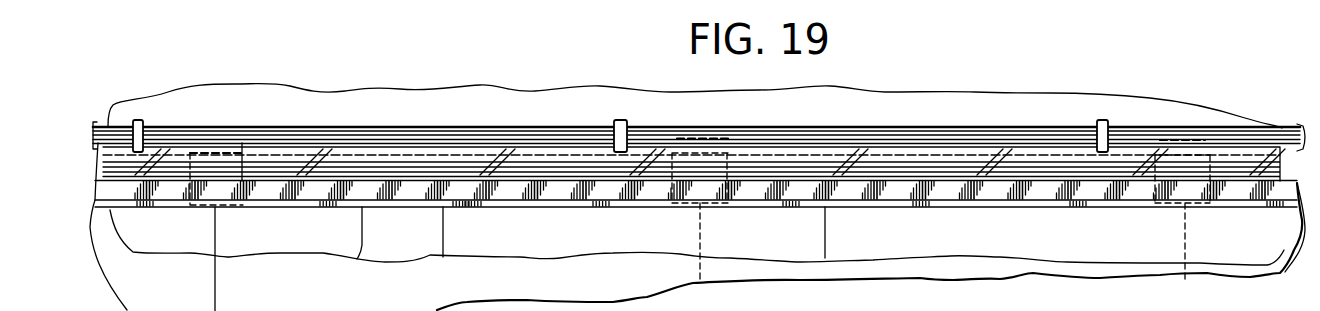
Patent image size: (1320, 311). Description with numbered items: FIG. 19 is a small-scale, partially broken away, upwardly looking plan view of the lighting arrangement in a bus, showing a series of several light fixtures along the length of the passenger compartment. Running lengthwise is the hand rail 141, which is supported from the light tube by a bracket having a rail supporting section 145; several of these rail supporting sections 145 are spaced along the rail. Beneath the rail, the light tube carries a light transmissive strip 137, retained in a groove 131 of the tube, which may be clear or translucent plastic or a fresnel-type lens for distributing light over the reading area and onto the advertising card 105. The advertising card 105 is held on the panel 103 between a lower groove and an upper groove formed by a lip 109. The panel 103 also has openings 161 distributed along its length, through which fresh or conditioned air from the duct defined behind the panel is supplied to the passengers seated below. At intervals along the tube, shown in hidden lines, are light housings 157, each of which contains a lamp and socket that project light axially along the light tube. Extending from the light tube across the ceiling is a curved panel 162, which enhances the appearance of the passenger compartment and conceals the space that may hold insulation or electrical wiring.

The panel 103 is at (1172, 274).
The advertising card 105 is at (195, 247).
The lip 109 is at (357, 259).
The groove 131 is at (165, 207).
The light transmissive strip 137 is at (387, 156).
The hand rail 141 is at (1010, 129).
The rail supporting section 145 is at (139, 120).
The light housing 157 is at (1205, 140).
The openings 161 is at (650, 188).
The curved panel 162 is at (893, 100).